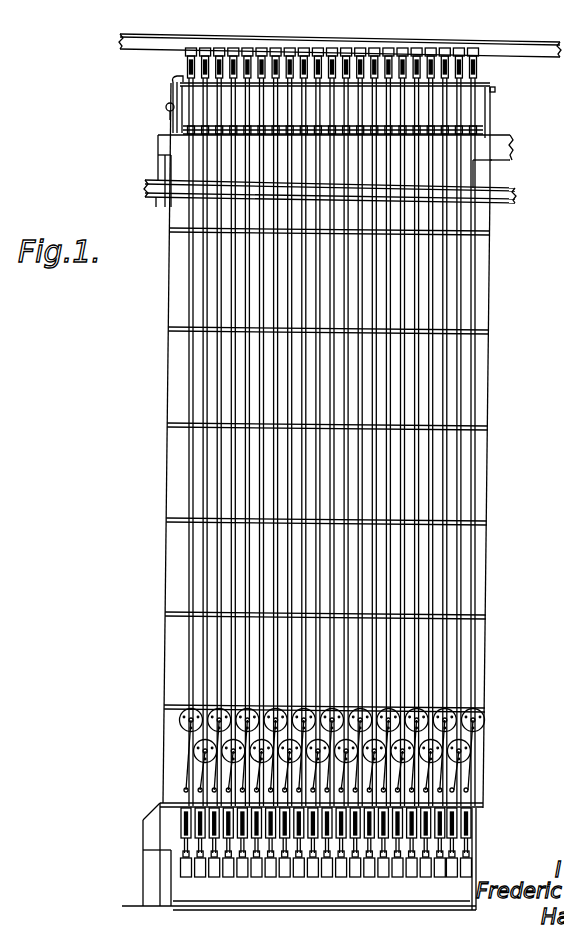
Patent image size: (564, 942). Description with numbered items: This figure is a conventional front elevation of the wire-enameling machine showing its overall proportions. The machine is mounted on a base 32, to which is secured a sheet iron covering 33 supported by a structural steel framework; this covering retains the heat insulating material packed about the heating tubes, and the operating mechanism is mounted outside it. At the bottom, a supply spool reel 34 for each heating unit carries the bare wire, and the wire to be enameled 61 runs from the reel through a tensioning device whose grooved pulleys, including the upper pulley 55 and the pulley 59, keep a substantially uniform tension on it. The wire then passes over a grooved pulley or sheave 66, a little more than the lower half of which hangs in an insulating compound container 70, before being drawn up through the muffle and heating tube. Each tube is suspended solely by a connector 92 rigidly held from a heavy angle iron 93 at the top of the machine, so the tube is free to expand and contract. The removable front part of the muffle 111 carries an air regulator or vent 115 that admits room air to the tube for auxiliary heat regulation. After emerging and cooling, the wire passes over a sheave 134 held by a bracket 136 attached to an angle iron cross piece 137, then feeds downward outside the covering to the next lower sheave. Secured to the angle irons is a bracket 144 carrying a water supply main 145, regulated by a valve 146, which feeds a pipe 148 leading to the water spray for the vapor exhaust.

The base 32 is at (246, 895).
The sheet iron covering 33 is at (488, 483).
The supply spool reel 34 is at (458, 736).
The grooved pulley 55 is at (185, 788).
The grooved pulley 59 is at (160, 803).
The wire to be enameled 61 is at (459, 372).
The grooved pulley or sheave 66 is at (194, 855).
The insulating compound container 70 is at (196, 868).
The connector 92 is at (448, 139).
The angle iron 93 is at (500, 145).
The front part of the muffle 111 is at (472, 830).
The air regulator or vent 115 is at (478, 815).
The sheave 134 is at (199, 48).
The bracket 136 is at (234, 48).
The angle iron cross piece 137 is at (456, 45).
The bracket 144 is at (490, 112).
The water supply main 145 is at (178, 82).
The valve 146 is at (166, 107).
The pipe 148 is at (461, 108).